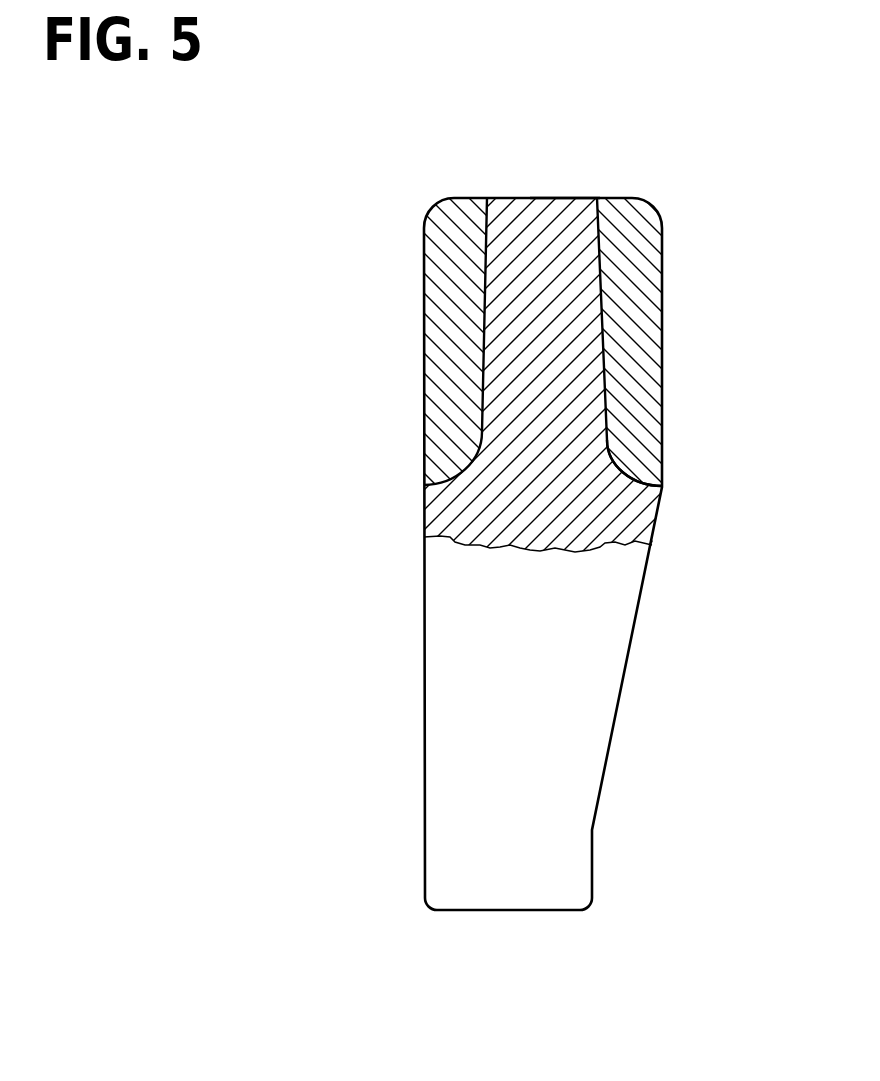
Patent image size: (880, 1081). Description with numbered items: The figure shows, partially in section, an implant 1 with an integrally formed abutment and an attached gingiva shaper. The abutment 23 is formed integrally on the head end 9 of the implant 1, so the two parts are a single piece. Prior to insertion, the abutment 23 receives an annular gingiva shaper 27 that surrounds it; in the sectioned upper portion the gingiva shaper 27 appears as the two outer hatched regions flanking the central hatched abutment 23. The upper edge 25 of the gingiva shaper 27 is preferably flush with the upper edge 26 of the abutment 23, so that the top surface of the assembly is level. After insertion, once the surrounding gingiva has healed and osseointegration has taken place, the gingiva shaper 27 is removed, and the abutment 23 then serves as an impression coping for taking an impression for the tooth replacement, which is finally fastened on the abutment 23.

The implant 1 is at (525, 685).
The head end 9 is at (661, 487).
The abutment 23 is at (545, 325).
The upper edge 25 is at (468, 198).
The upper edge 26 is at (567, 198).
The annular gingiva shaper 27 is at (632, 310).